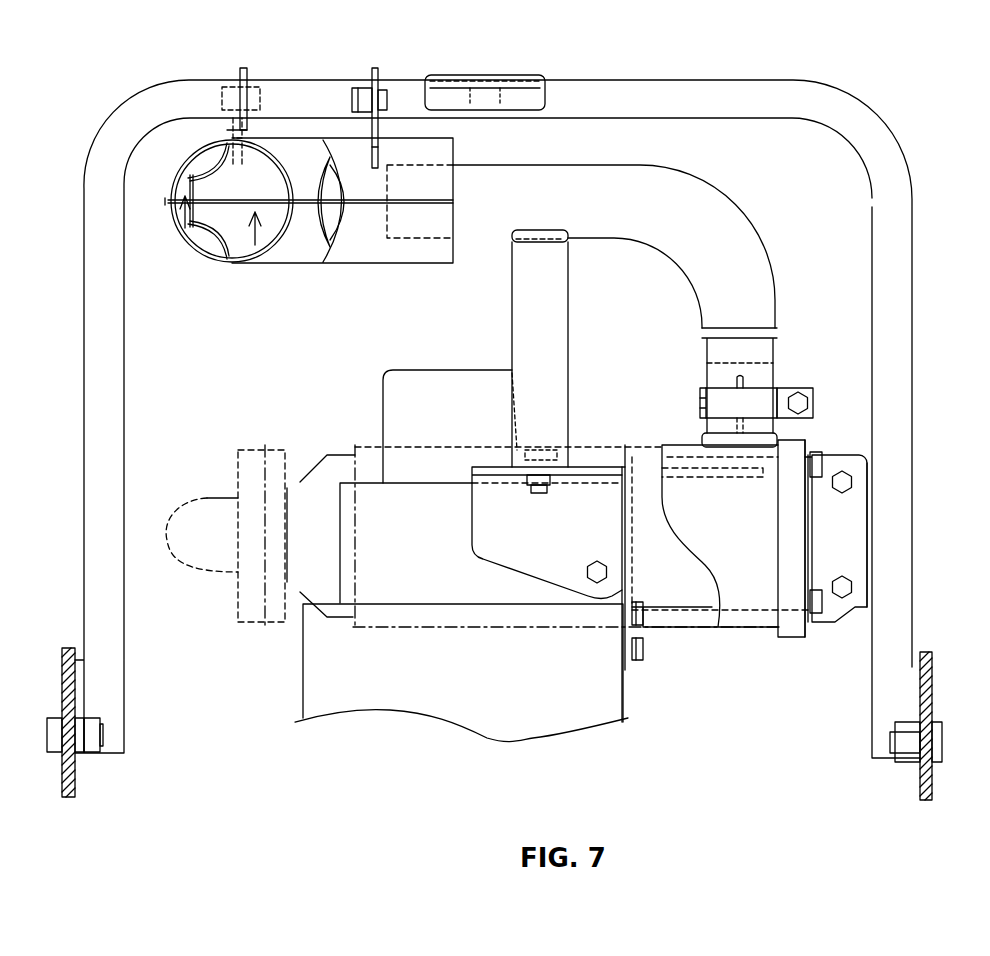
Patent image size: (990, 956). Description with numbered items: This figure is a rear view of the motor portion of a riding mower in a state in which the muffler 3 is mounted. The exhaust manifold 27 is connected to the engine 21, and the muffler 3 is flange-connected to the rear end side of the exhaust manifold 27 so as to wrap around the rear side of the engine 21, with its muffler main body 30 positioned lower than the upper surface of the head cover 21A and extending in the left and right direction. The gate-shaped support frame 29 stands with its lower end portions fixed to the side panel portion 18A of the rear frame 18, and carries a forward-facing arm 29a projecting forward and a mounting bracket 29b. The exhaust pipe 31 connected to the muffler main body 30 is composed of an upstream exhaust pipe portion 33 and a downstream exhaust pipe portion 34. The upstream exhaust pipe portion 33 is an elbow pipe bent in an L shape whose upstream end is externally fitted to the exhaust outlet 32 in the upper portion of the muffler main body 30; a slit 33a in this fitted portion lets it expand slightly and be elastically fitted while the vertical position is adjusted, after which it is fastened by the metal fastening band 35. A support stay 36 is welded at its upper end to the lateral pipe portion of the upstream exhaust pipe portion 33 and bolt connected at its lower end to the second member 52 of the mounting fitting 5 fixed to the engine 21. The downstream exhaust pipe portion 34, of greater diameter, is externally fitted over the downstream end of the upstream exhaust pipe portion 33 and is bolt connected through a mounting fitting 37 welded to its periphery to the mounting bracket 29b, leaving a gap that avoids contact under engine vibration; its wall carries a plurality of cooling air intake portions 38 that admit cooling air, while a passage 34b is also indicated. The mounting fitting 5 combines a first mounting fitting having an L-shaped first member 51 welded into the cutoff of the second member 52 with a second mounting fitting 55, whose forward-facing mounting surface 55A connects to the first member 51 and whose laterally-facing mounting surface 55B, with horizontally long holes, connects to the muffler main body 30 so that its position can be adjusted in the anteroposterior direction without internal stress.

The muffler 3 is at (455, 628).
The mounting fitting 5 is at (594, 583).
The rear frame 18 is at (494, 725).
The side panel portion 18A is at (75, 780).
The engine 21 is at (313, 675).
The head cover 21A is at (390, 400).
The exhaust manifold 27 is at (207, 497).
The support frame 29 is at (883, 133).
The forward-facing arm 29a is at (495, 110).
The mounting bracket 29b is at (243, 65).
The muffler main body 30 is at (757, 593).
The exhaust pipe 31 is at (737, 196).
The exhaust outlet 32 is at (707, 433).
The upstream exhaust pipe portion 33 is at (775, 287).
The slit 33a is at (740, 377).
The downstream exhaust pipe portion 34 is at (305, 250).
The float chamber passage 34b is at (252, 247).
The metal fastening band 35 is at (700, 397).
The support stay 36 is at (565, 292).
The mounting fitting 37 is at (227, 130).
The cooling air intake portion 38 is at (212, 258).
The first member 51 is at (678, 580).
The second member 52 is at (548, 567).
The second mounting fitting 55 is at (848, 445).
The forward-facing mounting surface 55A is at (850, 603).
The laterally-facing mounting surface 55B is at (803, 525).